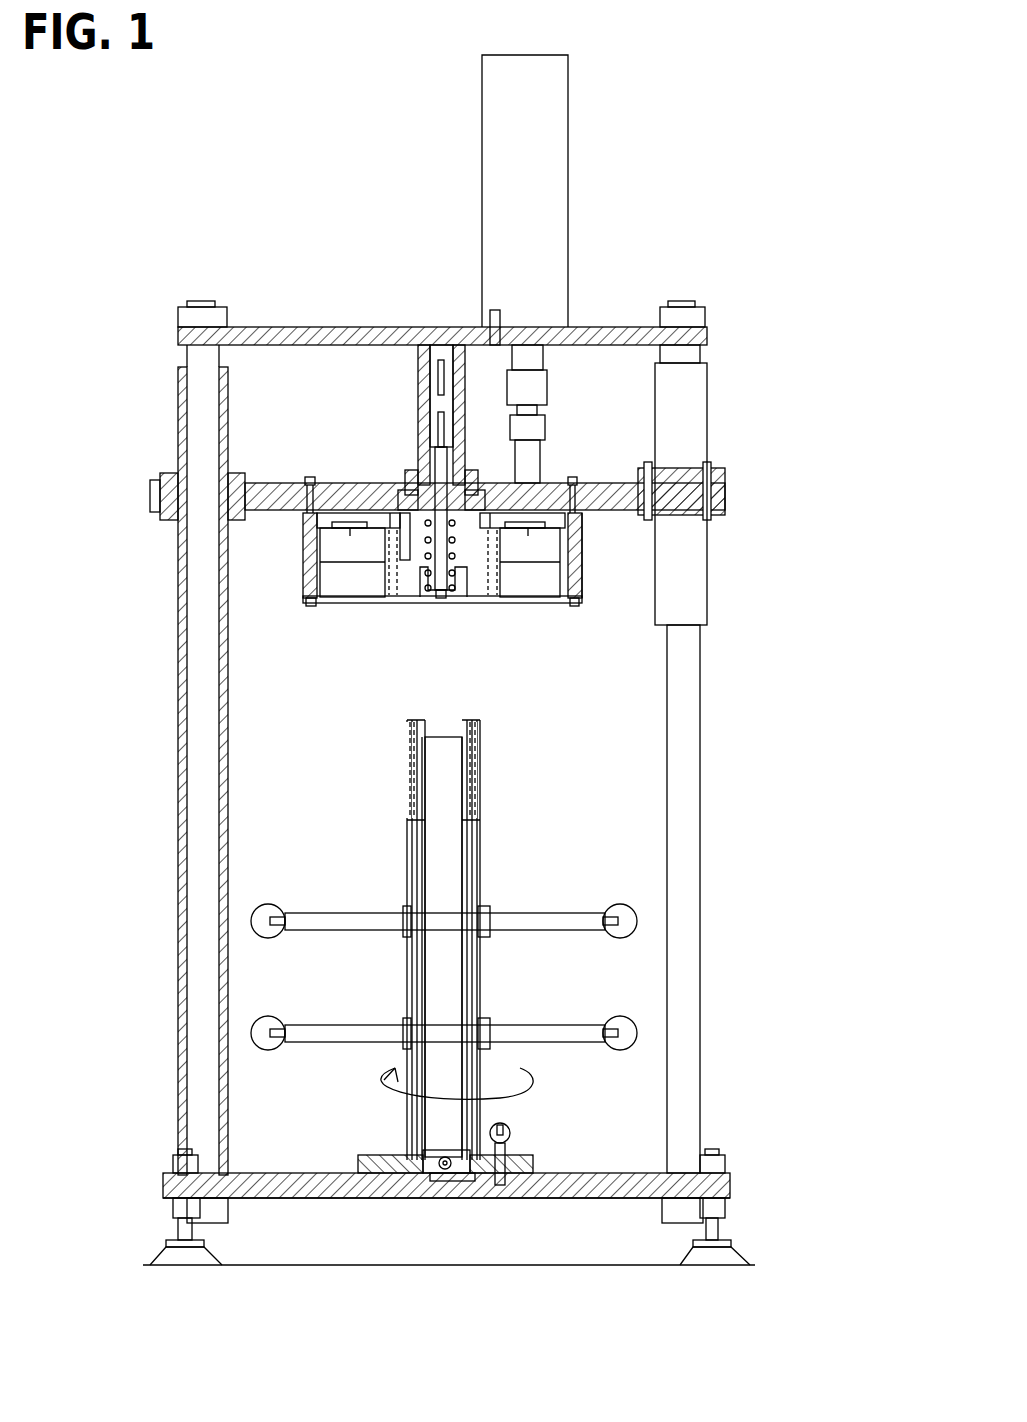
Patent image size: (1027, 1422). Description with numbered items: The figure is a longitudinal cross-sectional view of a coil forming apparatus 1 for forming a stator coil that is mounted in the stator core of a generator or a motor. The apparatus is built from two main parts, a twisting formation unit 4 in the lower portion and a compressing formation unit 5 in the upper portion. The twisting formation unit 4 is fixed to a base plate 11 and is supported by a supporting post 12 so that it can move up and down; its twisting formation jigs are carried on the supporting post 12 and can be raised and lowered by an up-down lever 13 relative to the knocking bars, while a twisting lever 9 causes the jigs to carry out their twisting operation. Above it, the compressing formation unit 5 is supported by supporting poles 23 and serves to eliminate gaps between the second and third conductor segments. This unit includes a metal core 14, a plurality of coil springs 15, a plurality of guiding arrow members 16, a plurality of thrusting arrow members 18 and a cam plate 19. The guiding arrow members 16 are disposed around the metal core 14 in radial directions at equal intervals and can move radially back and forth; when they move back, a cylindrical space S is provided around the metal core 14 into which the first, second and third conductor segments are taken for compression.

The coil forming apparatus 1 is at (274, 218).
The twisting formation unit 4 is at (540, 865).
The compressing formation unit 5 is at (570, 626).
The twisting lever 9 is at (637, 1028).
The base plate 11 is at (607, 1200).
The supporting post 12 is at (440, 1115).
The up-down lever 13 is at (637, 912).
The metal core 14 is at (458, 595).
The coil springs 15 is at (358, 567).
The guiding arrow members 16 is at (545, 553).
The thrusting arrow members 18 is at (515, 580).
The cam plate 19 is at (583, 525).
The supporting poles 23 is at (695, 1098).
The cylindrical space S is at (415, 578).